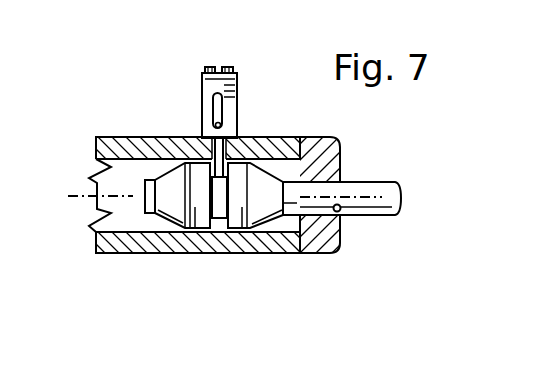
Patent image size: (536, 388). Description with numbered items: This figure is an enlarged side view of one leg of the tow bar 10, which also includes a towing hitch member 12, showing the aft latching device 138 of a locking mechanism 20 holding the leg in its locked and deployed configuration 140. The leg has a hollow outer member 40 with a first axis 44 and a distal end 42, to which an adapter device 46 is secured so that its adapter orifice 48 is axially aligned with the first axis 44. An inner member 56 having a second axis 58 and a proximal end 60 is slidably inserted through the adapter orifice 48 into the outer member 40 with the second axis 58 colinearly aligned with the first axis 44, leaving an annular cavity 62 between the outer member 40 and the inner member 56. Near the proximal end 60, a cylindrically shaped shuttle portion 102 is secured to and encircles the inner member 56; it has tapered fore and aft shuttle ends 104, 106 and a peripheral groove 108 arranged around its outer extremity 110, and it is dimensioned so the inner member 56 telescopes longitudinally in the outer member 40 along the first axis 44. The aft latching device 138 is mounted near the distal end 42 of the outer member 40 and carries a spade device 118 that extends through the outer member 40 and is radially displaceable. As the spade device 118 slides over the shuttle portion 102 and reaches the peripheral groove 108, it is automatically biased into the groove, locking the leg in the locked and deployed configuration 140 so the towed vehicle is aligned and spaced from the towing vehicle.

The tow bar 10 is at (137, 108).
The towing hitch member 12 is at (217, 58).
The locking mechanism 20 is at (181, 97).
The hollow outer member 40 is at (118, 246).
The distal end 42 is at (290, 245).
The first axis 44 is at (70, 197).
The adapter device 46 is at (334, 141).
The adapter orifice 48 is at (341, 212).
The inner member 56 is at (388, 181).
The second axis 58 is at (357, 199).
The proximal end 60 is at (291, 210).
The annular cavity 62 is at (290, 172).
The shuttle portion 102 is at (195, 208).
The fore shuttle end 104 is at (165, 208).
The aft shuttle end 106 is at (258, 178).
The peripheral groove 108 is at (216, 245).
The outer extremity 110 is at (242, 208).
The spade device 118 is at (216, 152).
The aft latching device 138 is at (238, 103).
The locked and deployed configuration 140 is at (170, 52).